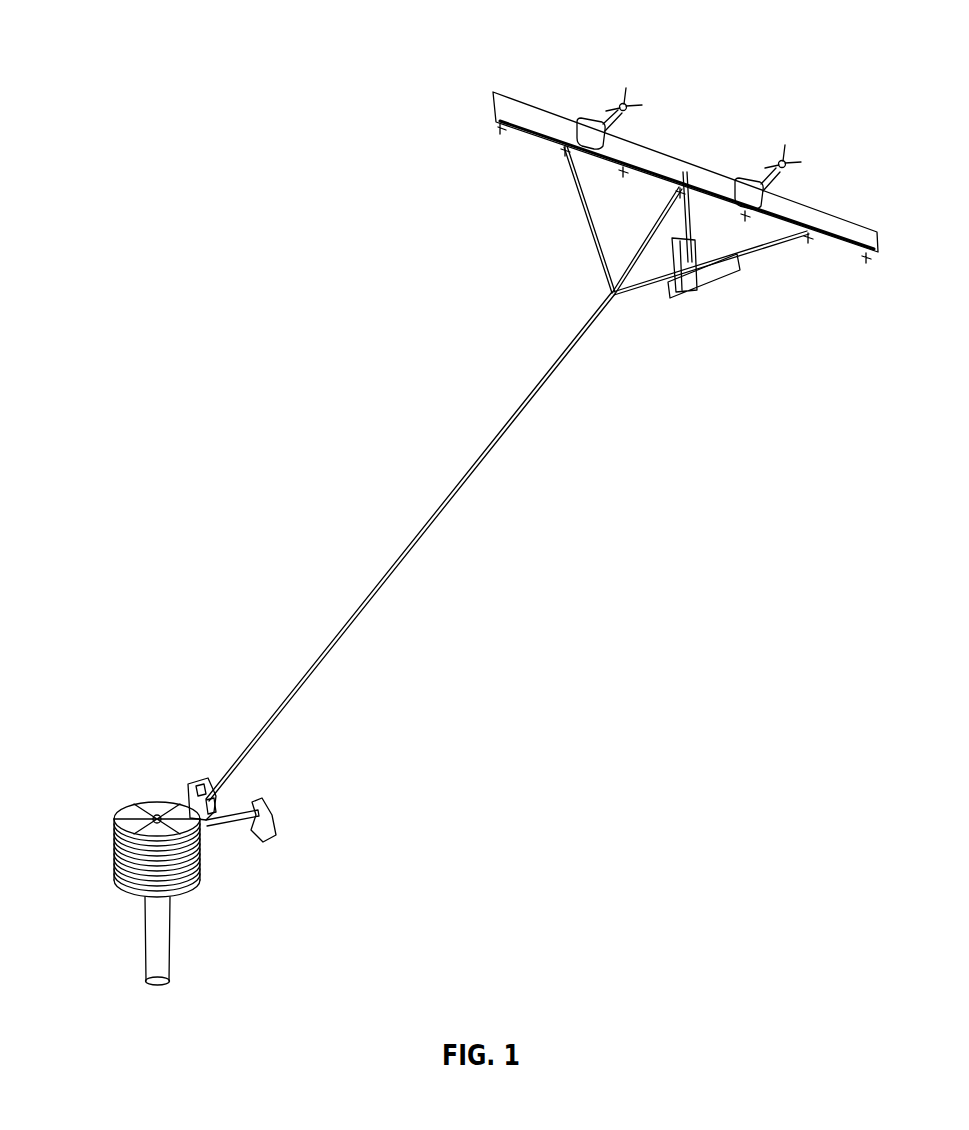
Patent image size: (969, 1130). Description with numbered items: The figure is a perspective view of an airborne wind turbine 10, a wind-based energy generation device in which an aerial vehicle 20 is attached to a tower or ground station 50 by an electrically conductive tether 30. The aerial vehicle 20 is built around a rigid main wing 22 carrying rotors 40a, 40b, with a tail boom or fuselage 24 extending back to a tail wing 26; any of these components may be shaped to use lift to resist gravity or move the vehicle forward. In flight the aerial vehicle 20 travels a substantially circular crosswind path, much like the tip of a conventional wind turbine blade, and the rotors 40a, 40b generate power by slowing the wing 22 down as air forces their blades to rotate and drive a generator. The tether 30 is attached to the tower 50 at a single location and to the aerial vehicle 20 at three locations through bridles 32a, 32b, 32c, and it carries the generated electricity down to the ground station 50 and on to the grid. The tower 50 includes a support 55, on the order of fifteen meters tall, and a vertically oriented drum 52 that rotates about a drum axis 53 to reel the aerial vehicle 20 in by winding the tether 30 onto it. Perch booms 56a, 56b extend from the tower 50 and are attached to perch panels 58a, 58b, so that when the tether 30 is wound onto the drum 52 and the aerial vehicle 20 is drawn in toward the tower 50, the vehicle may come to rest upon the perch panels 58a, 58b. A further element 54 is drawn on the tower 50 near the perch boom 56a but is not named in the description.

The airborne wind turbine 10 is at (292, 122).
The aerial vehicle 20 is at (706, 158).
The main wing 22 is at (828, 220).
The tail boom 24 is at (702, 210).
The tail wing 26 is at (700, 290).
The electrically conductive tether 30 is at (545, 383).
The bridle 32a is at (573, 178).
The bridle 32b is at (640, 240).
The bridle 32c is at (770, 238).
The rotor 40a is at (590, 118).
The rotor 40b is at (624, 102).
The tower 50 is at (78, 794).
The drum 52 is at (198, 885).
The drum axis 53 is at (156, 813).
The bracket 54 is at (222, 810).
The support 55 is at (140, 922).
The perch boom 56a is at (230, 830).
The perch boom 56b is at (195, 785).
The perch panel 58a is at (280, 826).
The perch panel 58b is at (202, 780).